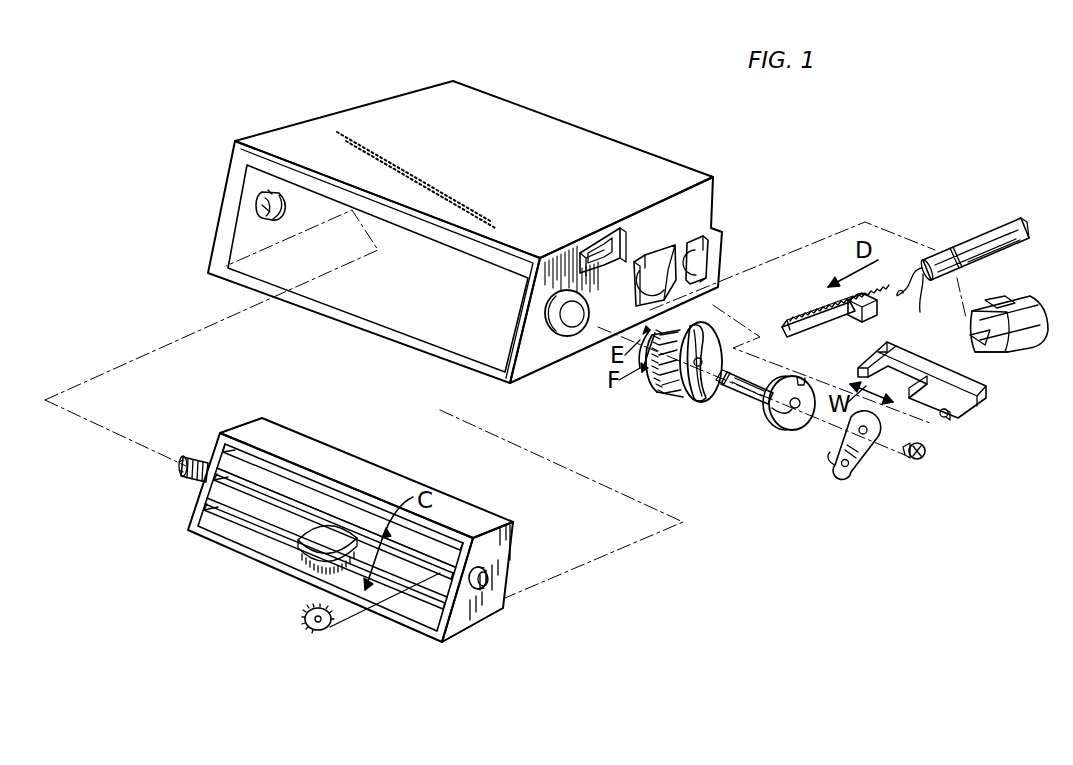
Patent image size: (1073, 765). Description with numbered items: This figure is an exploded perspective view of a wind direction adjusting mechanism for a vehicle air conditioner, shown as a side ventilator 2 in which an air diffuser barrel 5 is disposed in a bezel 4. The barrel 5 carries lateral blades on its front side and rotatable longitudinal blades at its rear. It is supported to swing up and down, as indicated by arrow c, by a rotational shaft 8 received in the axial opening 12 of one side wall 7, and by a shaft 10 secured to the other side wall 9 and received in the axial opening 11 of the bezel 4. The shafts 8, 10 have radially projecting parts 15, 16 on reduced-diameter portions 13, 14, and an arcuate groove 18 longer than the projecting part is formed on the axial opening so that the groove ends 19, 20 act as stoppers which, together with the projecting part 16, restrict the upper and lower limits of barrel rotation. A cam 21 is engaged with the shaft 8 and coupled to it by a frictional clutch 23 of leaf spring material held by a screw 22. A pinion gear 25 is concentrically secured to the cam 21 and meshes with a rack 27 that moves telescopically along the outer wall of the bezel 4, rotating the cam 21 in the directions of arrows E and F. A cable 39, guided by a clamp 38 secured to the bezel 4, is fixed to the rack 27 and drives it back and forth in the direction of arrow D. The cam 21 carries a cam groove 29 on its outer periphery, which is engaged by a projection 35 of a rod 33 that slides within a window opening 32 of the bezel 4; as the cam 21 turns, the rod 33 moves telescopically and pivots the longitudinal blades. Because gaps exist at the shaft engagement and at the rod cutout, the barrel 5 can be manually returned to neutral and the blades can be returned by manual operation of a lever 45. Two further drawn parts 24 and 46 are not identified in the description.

The side ventilator 2 is at (524, 99).
The bezel 4 is at (567, 130).
The air diffuser barrel 5 is at (455, 641).
The side wall 7 is at (510, 542).
The rotational shaft 8 is at (768, 405).
The side wall 9 is at (192, 531).
The shaft 10 is at (193, 475).
The axial opening 11 is at (277, 195).
The axial opening 12 is at (487, 590).
The reduced-diameter portion 13 is at (733, 375).
The reduced-diameter portion 14 is at (194, 455).
The radially projecting part 15 is at (729, 388).
The radially projecting part 16 is at (180, 462).
The arcuate groove 18 is at (262, 205).
The groove end 19 is at (268, 190).
The groove end 20 is at (268, 213).
The cam 21 is at (660, 384).
The screw 22 is at (928, 456).
The frictional clutch 23 is at (868, 442).
The lever hook 24 is at (828, 456).
The pinion gear 25 is at (655, 380).
The rack 27 is at (822, 310).
The cam groove 29 is at (703, 323).
The window opening 32 is at (606, 230).
The rod 33 is at (990, 395).
The projection 35 is at (955, 418).
The clamp 38 is at (1005, 335).
The cable 39 is at (920, 302).
The lever 45 is at (303, 552).
The vane 46 is at (262, 512).